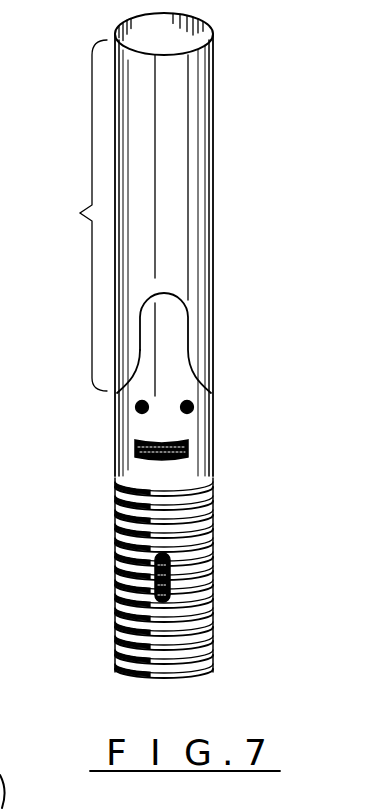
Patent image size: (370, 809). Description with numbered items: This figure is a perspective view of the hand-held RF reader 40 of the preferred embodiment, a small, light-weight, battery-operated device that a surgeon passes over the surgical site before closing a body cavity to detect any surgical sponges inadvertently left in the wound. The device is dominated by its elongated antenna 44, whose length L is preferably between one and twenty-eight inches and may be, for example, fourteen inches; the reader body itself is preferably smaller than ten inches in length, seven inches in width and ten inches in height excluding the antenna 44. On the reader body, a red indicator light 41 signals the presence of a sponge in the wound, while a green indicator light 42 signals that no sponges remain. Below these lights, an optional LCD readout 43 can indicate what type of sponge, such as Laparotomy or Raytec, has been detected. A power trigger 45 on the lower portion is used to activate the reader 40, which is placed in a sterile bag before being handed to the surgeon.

The hand-held RF reader 40 is at (147, 345).
The red indicator light 41 is at (194, 407).
The green indicator light 42 is at (136, 406).
The LCD readout 43 is at (190, 448).
The antenna 44 is at (214, 252).
The power trigger 45 is at (214, 577).